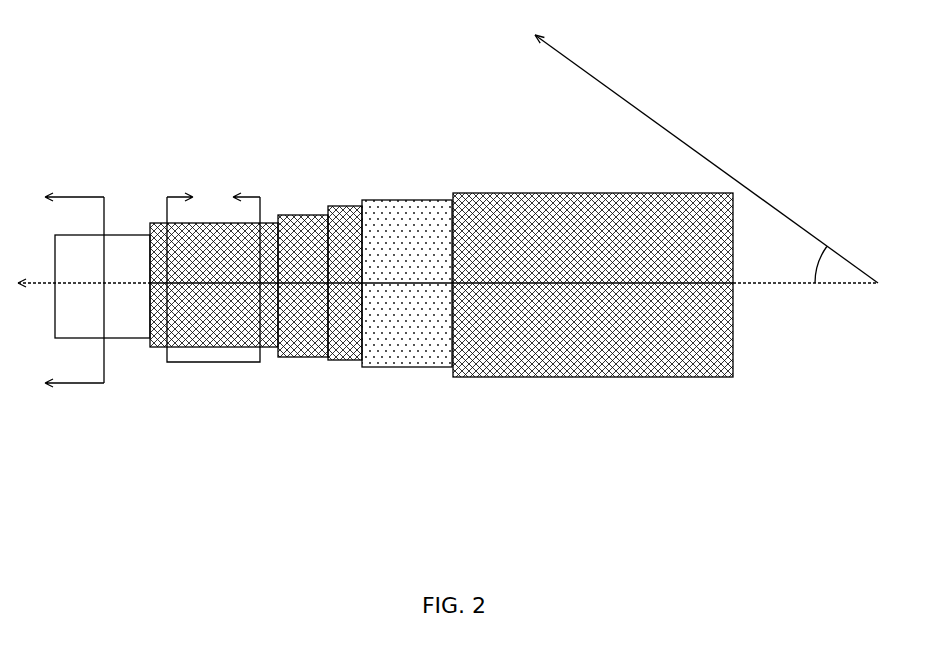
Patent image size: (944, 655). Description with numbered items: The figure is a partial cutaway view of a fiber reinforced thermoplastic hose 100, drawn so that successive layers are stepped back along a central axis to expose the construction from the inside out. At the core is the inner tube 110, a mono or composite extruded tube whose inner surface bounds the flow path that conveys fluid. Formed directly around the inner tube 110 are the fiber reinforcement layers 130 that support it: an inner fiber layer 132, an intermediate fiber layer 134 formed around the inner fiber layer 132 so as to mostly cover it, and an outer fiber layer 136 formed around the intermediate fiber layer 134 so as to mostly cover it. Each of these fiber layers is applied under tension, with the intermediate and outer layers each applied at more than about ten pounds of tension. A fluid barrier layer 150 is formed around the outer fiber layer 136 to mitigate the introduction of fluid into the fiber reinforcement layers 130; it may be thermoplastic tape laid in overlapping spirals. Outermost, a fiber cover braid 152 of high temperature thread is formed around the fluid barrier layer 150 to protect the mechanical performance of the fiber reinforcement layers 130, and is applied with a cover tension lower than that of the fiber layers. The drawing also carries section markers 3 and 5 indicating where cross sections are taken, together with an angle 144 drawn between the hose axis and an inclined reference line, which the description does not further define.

The hose 100 is at (448, 158).
The inner tube 110 is at (117, 234).
The fiber reinforcement layers 130 is at (289, 174).
The inner fiber layer 132 is at (215, 349).
The intermediate fiber layer 134 is at (305, 358).
The outer fiber layer 136 is at (352, 362).
The angle 144 is at (816, 268).
The fluid barrier layer 150 is at (420, 368).
The fiber cover braid 152 is at (590, 378).
The section line 3- 3 is at (66, 291).
The section line 5- 5 is at (213, 276).